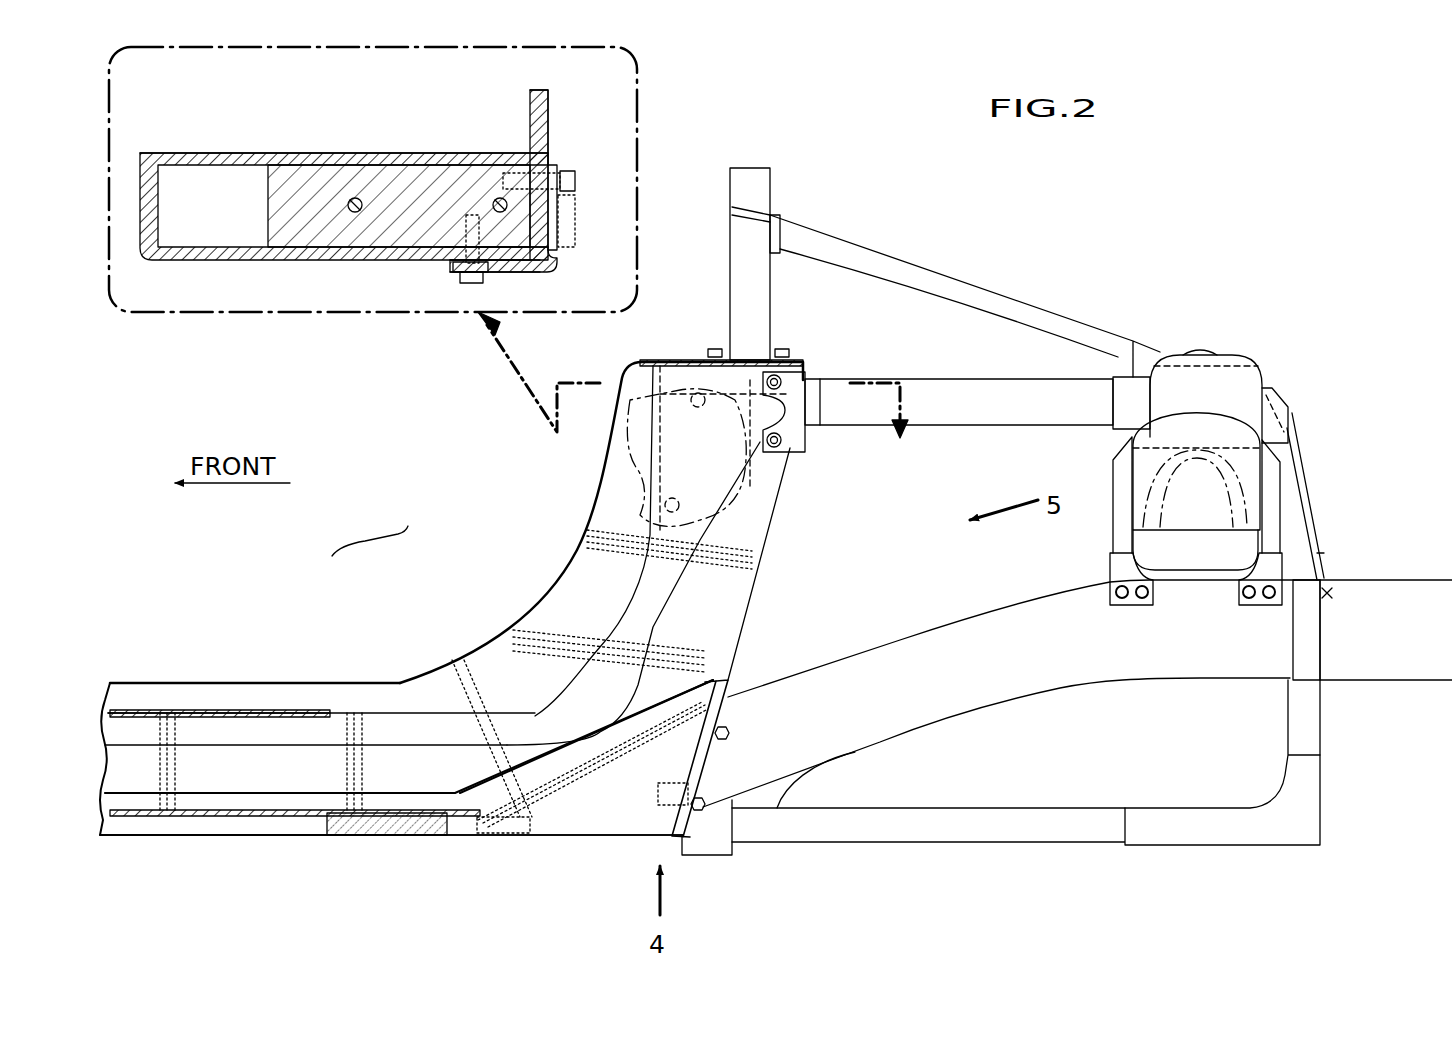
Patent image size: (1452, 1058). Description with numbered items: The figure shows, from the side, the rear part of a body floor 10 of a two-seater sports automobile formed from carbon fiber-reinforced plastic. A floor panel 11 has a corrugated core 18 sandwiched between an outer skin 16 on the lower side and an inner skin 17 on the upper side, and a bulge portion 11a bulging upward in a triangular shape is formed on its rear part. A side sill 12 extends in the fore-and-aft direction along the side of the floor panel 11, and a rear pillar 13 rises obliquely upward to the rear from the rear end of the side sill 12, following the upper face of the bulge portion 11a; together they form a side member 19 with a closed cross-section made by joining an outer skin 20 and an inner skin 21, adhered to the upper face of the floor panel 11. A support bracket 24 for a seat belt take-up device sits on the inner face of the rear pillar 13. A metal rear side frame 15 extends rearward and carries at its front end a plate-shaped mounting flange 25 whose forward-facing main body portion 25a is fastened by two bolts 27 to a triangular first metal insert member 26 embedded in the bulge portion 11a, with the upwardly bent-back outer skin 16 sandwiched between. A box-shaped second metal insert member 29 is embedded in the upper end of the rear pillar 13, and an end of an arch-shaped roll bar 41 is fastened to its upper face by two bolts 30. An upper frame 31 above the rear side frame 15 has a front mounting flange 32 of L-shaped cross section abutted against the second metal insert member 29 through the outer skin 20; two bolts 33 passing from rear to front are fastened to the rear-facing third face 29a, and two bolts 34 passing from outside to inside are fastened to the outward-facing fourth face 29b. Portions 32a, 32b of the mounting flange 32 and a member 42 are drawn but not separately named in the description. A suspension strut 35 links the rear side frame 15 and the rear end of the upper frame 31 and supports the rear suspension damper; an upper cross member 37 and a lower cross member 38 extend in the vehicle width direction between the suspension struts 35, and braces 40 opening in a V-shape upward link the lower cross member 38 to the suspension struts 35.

The body floor 10 is at (195, 636).
The floor panel 11 is at (247, 840).
The bulge portion 11a is at (593, 812).
The side sill 12 is at (283, 712).
The rear pillar 13 is at (232, 142).
The rear side frame 15 is at (960, 628).
The outer skin 16 is at (178, 838).
The inner skin 17 is at (270, 808).
The corrugated core 18 is at (398, 822).
The side member 19 is at (370, 532).
The outer skin 20 is at (250, 260).
The inner skin 21 is at (320, 153).
The support bracket 24 is at (632, 455).
The mounting flange 25 is at (722, 752).
The main body portion 25a is at (712, 775).
The first metal insert member 26 is at (605, 752).
The bolt 27 is at (730, 730).
The second metal insert member 29 is at (258, 212).
The third face 29a is at (557, 222).
The fourth face 29b is at (515, 262).
The bolt 30 is at (500, 200).
The upper frame 31 is at (576, 178).
The mounting flange 32 is at (552, 270).
The vertical flange of bracket 32a is at (553, 175).
The horizontal flange of bracket 32b is at (455, 263).
The bolt 33 is at (577, 182).
The bolt 34 is at (470, 284).
The suspension strut 35 is at (1250, 362).
The upper cross member 37 is at (1271, 409).
The lower cross member 38 is at (1317, 640).
The brace 40 is at (1309, 490).
The roll bar 41 is at (745, 262).
The diagonal bar 42 is at (975, 268).